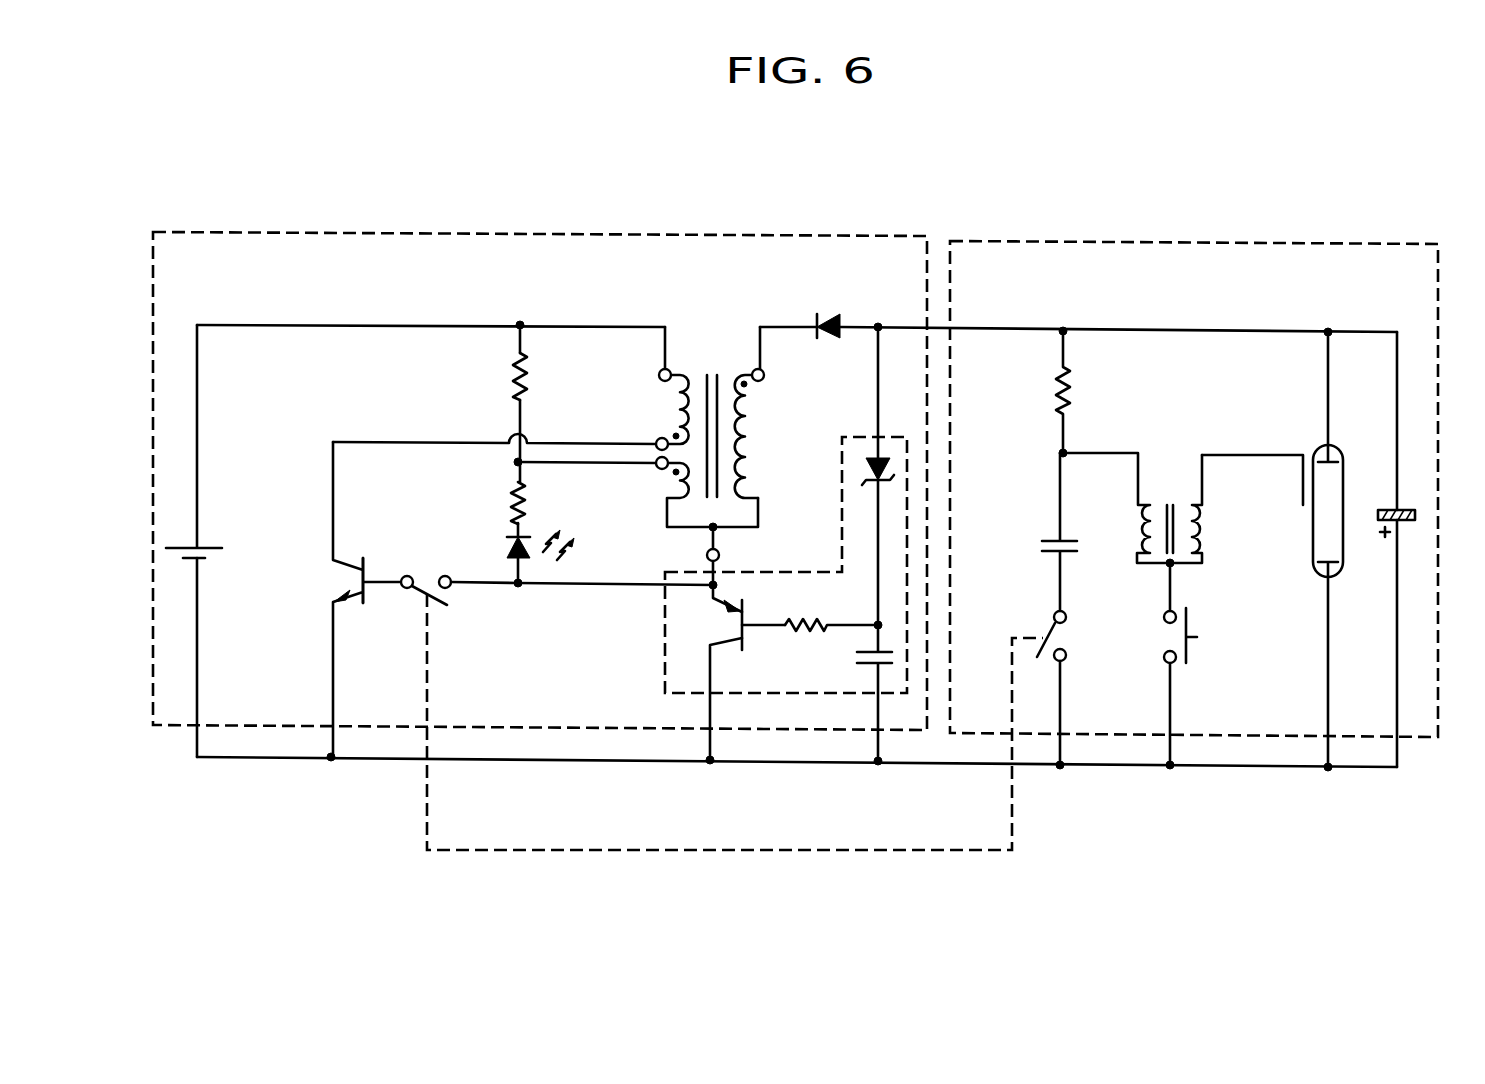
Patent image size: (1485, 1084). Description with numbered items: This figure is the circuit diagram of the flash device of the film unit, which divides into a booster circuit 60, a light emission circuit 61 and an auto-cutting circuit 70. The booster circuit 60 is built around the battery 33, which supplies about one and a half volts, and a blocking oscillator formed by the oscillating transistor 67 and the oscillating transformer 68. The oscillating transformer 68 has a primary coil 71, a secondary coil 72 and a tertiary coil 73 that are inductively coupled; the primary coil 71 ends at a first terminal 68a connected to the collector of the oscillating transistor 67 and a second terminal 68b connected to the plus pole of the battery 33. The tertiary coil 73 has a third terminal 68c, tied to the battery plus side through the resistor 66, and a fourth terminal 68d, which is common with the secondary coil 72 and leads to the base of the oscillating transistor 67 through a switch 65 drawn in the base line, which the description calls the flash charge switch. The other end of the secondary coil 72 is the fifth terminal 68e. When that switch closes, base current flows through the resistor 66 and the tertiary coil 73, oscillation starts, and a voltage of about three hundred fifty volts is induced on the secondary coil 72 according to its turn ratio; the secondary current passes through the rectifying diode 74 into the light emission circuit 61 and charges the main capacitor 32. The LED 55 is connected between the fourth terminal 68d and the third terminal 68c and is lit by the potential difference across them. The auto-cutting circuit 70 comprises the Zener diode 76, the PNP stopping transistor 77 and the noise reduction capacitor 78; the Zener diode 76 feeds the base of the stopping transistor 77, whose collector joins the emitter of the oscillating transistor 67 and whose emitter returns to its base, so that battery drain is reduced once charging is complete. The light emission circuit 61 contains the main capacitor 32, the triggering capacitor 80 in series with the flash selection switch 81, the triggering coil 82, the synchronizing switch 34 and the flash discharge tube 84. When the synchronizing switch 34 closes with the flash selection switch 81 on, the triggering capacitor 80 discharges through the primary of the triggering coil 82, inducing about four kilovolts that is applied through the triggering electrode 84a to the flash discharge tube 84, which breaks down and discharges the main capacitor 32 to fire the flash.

The main capacitor 32 is at (1392, 506).
The battery 33 is at (207, 546).
The synchronizing switch 34 is at (1192, 618).
The LED 55 is at (506, 550).
The booster circuit 60 is at (585, 232).
The light emission circuit 61 is at (1152, 241).
The switch 65 is at (418, 592).
The resistor 66 is at (512, 377).
The oscillating transistor 67 is at (366, 565).
The oscillating transformer 68 is at (708, 417).
The first terminal 68a is at (657, 441).
The second terminal 68b is at (658, 375).
The third terminal 68c is at (657, 468).
The fourth terminal 68d is at (720, 555).
The fifth terminal 68e is at (764, 375).
The auto-cutting circuit 70 is at (664, 628).
The primary coil 71 is at (680, 370).
The secondary coil 72 is at (748, 430).
The tertiary coil 73 is at (665, 496).
The rectifying diode 74 is at (828, 320).
The Zener diode 76 is at (870, 465).
The stopping transistor 77 is at (748, 607).
The noise reduction capacitor 78 is at (857, 652).
The triggering capacitor 80 is at (1070, 540).
The flash selection switch 81 is at (1047, 630).
The triggering coil 82 is at (1170, 468).
The flash discharge tube 84 is at (1343, 555).
The triggering electrode 84a is at (1300, 490).